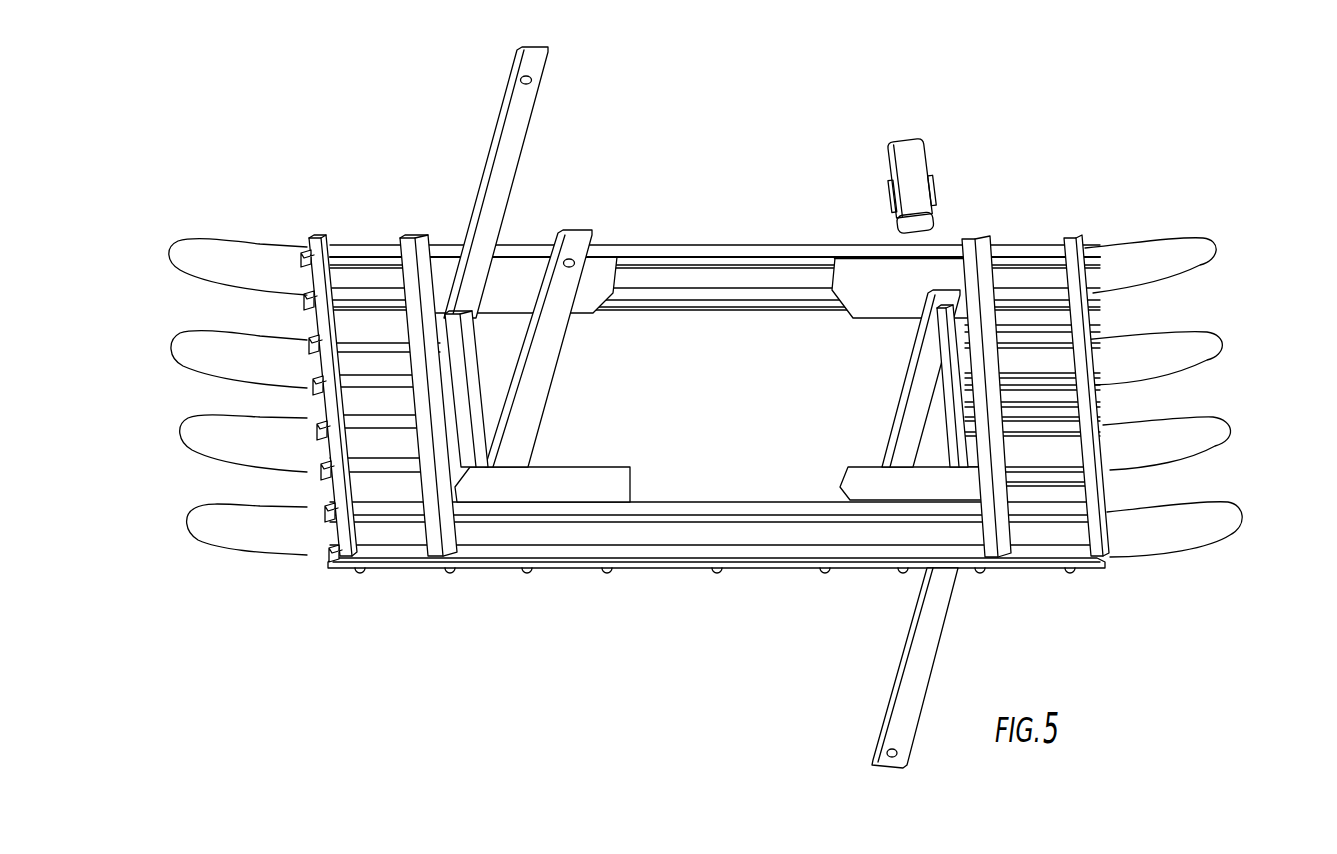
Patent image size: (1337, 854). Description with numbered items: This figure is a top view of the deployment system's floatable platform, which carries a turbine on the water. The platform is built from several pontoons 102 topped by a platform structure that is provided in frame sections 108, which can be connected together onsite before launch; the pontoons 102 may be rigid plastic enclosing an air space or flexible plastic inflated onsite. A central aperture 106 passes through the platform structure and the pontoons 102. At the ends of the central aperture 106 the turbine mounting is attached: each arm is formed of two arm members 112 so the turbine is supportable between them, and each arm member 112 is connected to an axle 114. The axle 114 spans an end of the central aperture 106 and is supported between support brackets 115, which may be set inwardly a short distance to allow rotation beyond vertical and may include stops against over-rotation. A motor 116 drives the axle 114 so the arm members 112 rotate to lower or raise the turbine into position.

The pontoons 102 is at (240, 268).
The central aperture 106 is at (657, 490).
The frame sections 108 is at (500, 568).
The arm members 112 is at (517, 127).
The axle 114 is at (948, 350).
The support brackets 115 is at (845, 305).
The motor 116 is at (908, 162).